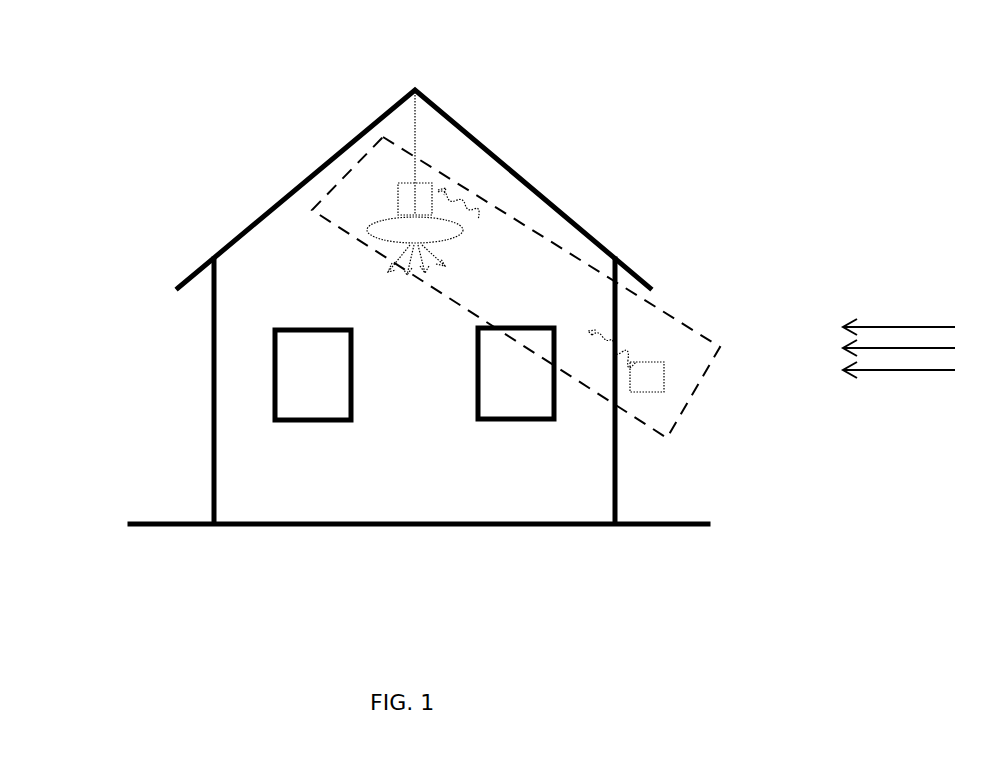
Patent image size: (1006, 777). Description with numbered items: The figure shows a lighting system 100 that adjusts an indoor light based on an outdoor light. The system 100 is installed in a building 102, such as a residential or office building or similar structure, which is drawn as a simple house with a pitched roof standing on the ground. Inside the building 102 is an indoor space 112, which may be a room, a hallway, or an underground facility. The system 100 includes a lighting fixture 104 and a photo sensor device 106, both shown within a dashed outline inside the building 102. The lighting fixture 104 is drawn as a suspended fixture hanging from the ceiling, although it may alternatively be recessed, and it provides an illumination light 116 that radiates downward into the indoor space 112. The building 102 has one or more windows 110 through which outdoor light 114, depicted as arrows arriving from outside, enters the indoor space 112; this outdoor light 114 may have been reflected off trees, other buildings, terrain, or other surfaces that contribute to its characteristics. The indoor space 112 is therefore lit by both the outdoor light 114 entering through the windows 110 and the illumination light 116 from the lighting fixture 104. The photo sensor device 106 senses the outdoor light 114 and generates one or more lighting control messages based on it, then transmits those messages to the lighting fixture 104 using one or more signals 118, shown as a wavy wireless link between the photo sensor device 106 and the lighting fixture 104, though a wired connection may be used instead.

The lighting system 100 is at (517, 223).
The building 102 is at (265, 217).
The lighting fixture 104 is at (390, 227).
The photo sensor device 106 is at (652, 362).
The windows 110 is at (275, 385).
The indoor space 112 is at (255, 467).
The outdoor light 114 is at (913, 327).
The illumination light 116 is at (393, 257).
The signals 118 is at (595, 338).